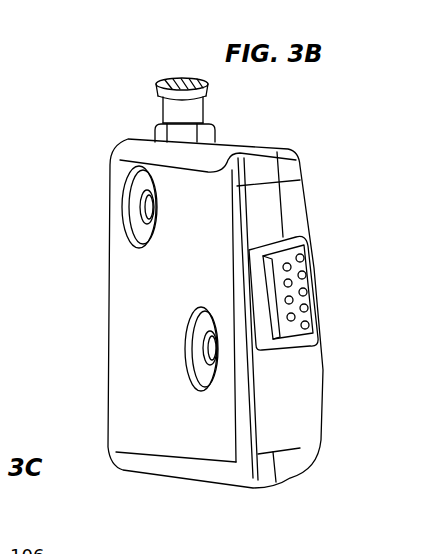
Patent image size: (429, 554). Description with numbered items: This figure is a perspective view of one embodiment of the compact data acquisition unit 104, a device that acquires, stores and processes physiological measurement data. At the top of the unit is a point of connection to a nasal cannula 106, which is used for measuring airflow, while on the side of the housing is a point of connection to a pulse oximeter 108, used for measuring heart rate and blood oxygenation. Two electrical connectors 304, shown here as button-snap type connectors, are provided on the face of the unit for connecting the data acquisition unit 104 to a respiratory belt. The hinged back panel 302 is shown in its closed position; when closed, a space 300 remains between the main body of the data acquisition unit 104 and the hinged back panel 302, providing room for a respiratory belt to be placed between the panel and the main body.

The space 300 is at (257, 412).
The hinged back panel 302 is at (135, 277).
The electrical connectors 304 is at (148, 208).
The data acquisition unit 104 is at (300, 166).
The nasal cannula connection 106 is at (208, 87).
The pulse oximeter connection 108 is at (316, 293).